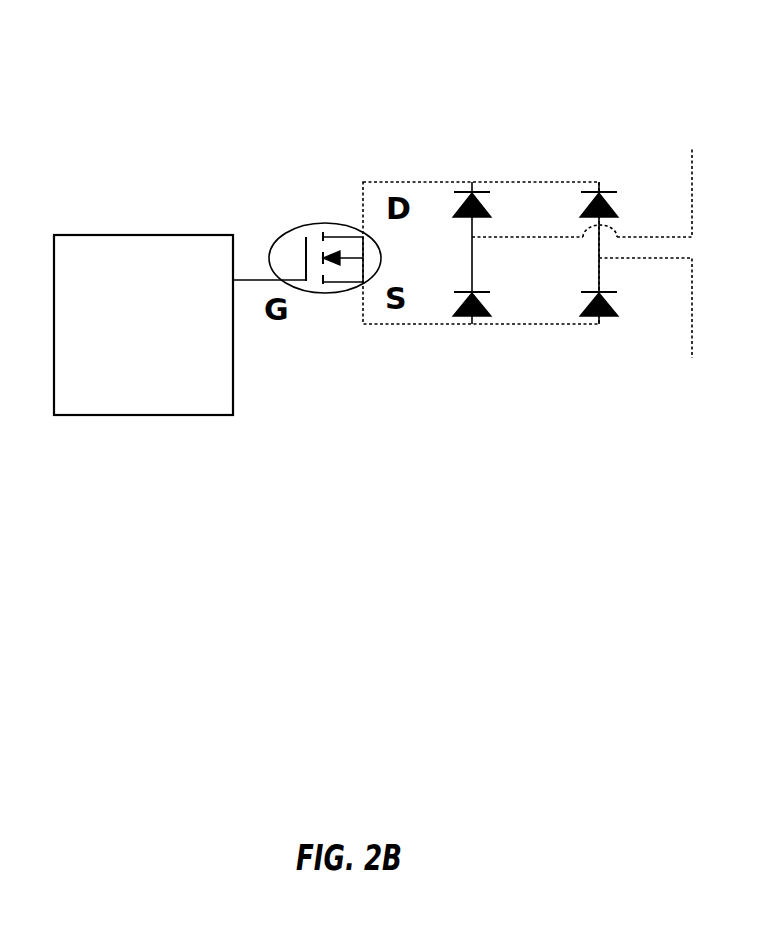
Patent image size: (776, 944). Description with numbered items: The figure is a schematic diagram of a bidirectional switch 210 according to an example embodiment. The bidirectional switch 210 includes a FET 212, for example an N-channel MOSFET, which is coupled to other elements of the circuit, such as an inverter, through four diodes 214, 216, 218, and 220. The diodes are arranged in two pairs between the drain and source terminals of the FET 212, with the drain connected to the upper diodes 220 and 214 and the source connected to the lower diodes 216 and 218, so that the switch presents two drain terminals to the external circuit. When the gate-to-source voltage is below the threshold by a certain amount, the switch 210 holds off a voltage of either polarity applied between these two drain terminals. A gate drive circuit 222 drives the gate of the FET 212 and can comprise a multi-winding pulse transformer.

The bidirectional switch 210 is at (675, 38).
The FET 212 is at (293, 228).
The diode 214 is at (600, 186).
The diode 216 is at (470, 325).
The diode 218 is at (595, 322).
The diode 220 is at (482, 183).
The gate drive circuit 222 is at (143, 325).